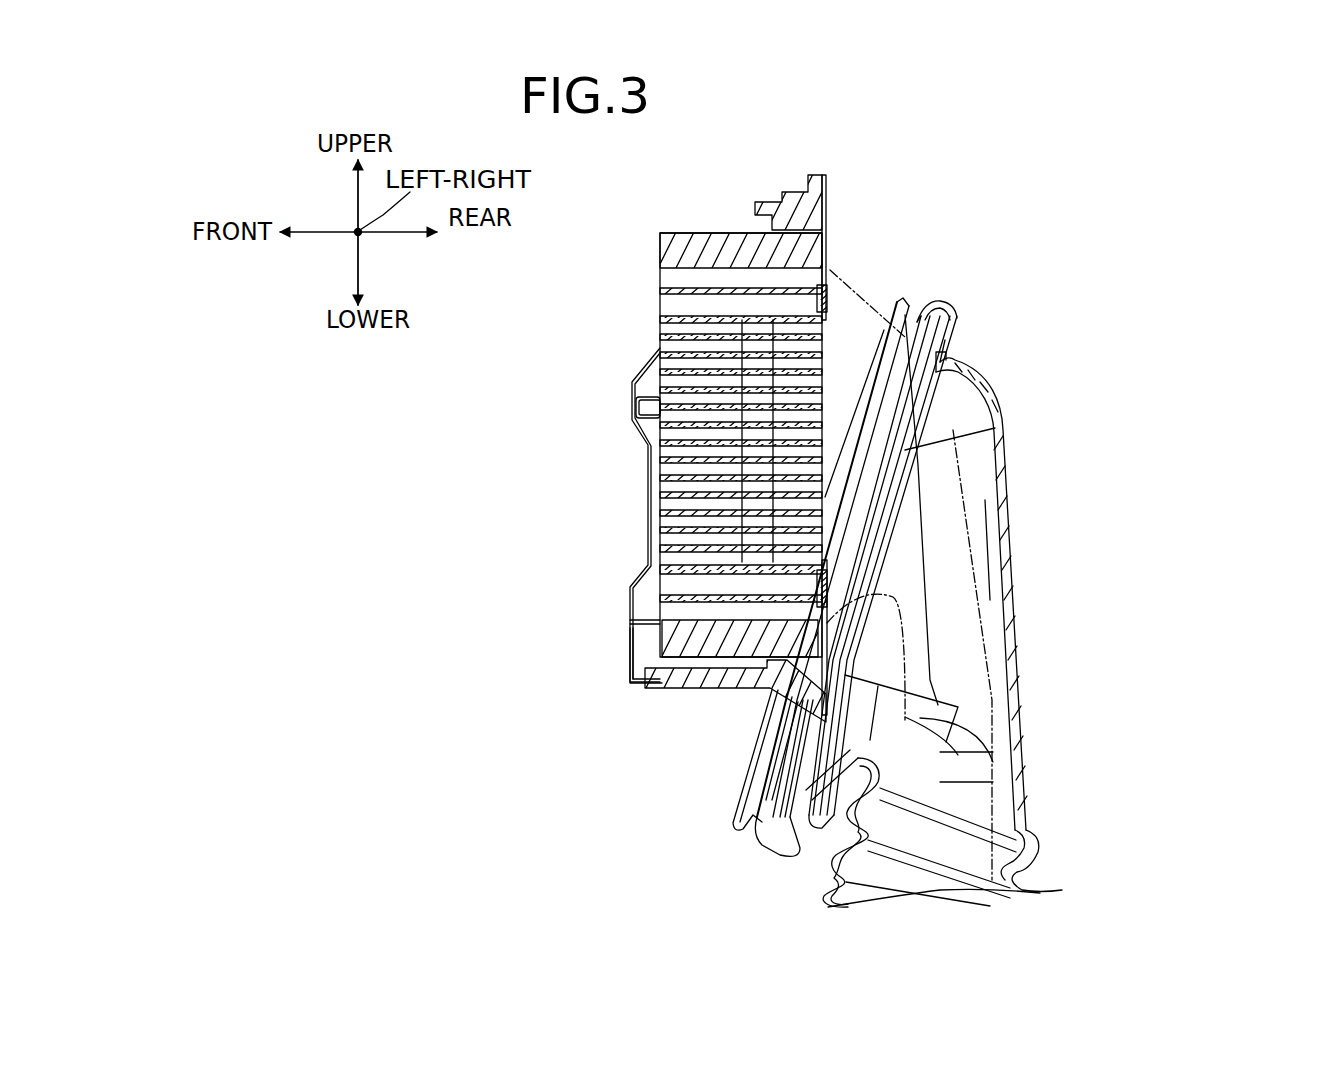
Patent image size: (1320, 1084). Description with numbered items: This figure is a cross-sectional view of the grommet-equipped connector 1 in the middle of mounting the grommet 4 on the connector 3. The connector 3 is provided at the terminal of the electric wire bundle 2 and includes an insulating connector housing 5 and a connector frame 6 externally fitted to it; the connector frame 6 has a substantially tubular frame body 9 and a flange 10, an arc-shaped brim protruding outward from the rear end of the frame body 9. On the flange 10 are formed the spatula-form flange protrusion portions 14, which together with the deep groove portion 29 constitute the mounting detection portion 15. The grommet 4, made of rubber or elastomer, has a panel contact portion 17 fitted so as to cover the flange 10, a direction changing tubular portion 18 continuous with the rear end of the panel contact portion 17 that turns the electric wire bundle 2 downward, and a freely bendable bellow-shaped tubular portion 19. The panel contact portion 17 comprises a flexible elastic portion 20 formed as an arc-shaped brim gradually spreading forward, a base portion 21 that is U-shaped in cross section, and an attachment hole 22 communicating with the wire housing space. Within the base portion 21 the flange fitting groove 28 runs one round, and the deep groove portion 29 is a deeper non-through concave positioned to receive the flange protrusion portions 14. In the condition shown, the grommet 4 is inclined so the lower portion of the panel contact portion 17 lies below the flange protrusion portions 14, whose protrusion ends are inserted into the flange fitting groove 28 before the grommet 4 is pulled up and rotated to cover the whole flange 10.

The grommet-equipped connector 1 is at (1118, 289).
The electric wire bundle 2 is at (985, 492).
The connector 3 is at (636, 368).
The grommet 4 is at (1024, 705).
The connector housing 5 is at (686, 250).
The connector frame 6 is at (630, 654).
The frame body 9 is at (667, 690).
The flange 10 is at (812, 178).
The flange protrusion portions 14 is at (813, 712).
The mounting detection portion 15 is at (496, 745).
The panel contact portion 17 is at (975, 212).
The direction changing tubular portion 18 is at (1010, 565).
The bellow-shaped tubular portion 19 is at (1033, 862).
The flexible elastic portion 20 is at (893, 300).
The base portion 21 is at (950, 305).
The attachment hole 22 is at (898, 388).
The flange fitting groove 28 is at (925, 332).
The deep groove portion 29 is at (767, 850).